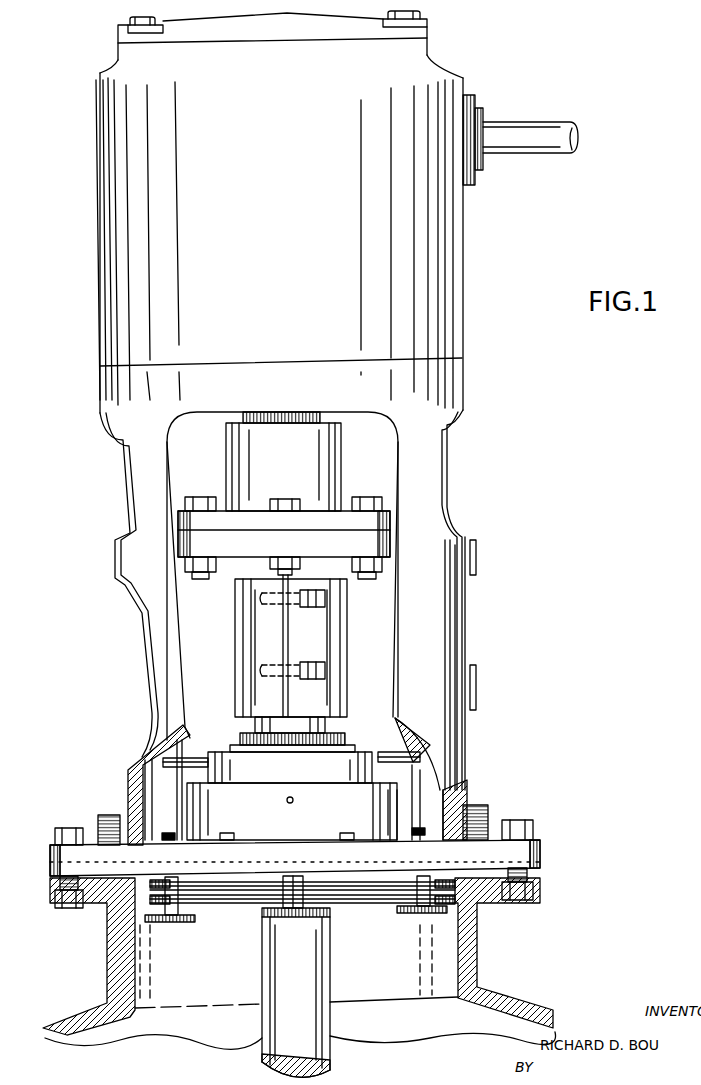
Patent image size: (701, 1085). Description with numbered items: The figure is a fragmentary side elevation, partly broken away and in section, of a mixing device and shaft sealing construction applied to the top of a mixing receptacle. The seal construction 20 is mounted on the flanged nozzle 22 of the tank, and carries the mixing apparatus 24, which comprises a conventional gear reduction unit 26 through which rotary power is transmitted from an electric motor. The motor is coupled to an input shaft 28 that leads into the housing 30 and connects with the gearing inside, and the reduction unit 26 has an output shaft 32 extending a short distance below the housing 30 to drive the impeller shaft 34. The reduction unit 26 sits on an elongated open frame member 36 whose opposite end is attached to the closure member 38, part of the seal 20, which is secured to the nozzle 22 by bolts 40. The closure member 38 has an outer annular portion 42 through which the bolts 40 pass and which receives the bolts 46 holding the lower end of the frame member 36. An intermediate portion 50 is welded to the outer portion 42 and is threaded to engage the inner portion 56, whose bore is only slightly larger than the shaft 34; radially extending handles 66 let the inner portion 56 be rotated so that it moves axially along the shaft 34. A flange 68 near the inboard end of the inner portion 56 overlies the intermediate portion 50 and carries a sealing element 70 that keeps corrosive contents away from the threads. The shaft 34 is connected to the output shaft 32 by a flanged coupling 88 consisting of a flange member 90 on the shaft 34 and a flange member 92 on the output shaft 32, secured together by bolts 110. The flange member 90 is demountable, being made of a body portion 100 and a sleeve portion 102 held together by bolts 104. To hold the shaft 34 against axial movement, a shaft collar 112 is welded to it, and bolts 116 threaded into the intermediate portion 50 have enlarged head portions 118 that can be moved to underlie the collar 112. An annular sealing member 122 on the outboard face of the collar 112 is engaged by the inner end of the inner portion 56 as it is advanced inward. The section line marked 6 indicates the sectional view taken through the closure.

The seal construction 20 is at (407, 783).
The flanged nozzle 22 is at (478, 975).
The mixing apparatus 24 is at (474, 401).
The gear reduction unit 26 is at (520, 257).
The input shaft 28 is at (550, 146).
The housing 30 is at (425, 63).
The output shaft 32 is at (275, 420).
The impeller shaft 34 is at (327, 725).
The open frame member 36 is at (452, 543).
The closure member 38 is at (546, 842).
The bolts 40 is at (65, 828).
The outer annular portion 42 is at (50, 862).
The bolts 46 is at (108, 815).
The intermediate portion 50 is at (331, 824).
The inner portion 56 is at (218, 753).
The handles 66 is at (165, 757).
The flange 68 is at (223, 887).
The sealing element 70 is at (250, 882).
The flanged coupling 88 is at (305, 521).
The flange member 90 is at (390, 543).
The flange member 92 is at (245, 520).
The body portion 100 is at (327, 630).
The sleeve portion 102 is at (243, 648).
The bolts 104 is at (330, 598).
The bolts 110 is at (362, 497).
The shaft collar 112 is at (252, 905).
The bolts 116 is at (303, 874).
The head portions 118 is at (160, 918).
The sealing member 122 is at (232, 900).
The section line 6- 6 is at (93, 938).